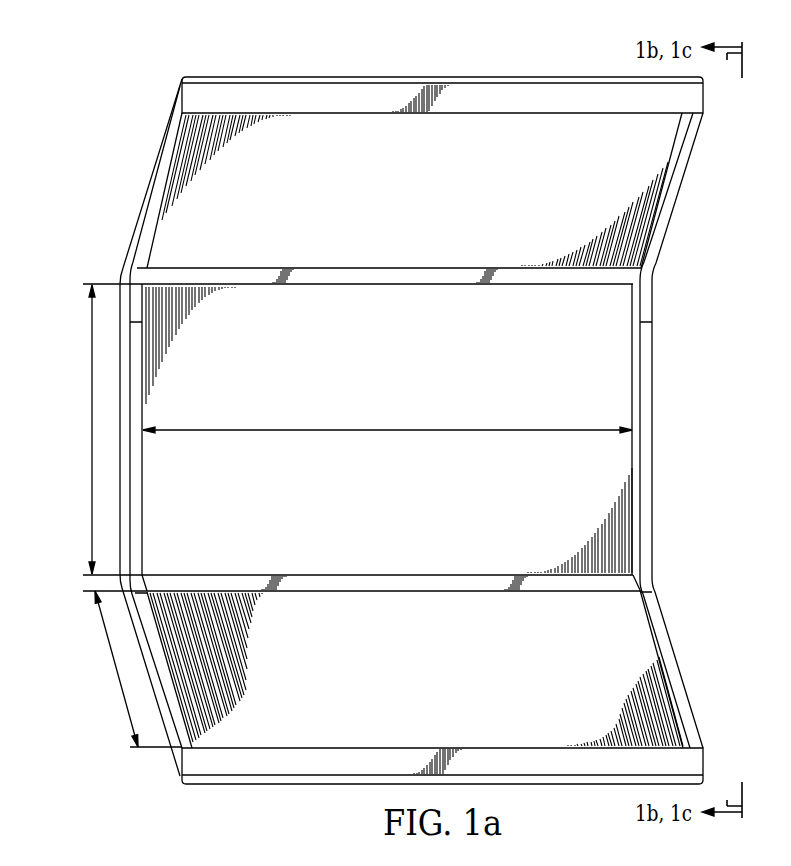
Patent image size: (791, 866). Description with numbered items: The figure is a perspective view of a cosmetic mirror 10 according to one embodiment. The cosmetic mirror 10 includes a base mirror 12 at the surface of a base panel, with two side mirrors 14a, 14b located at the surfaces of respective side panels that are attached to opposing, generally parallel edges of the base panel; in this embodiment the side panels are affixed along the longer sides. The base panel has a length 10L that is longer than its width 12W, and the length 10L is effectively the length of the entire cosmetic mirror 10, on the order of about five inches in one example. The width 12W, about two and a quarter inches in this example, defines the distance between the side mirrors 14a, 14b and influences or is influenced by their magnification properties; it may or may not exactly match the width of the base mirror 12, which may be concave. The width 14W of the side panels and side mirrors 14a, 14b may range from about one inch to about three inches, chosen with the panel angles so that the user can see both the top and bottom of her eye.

The cosmetic mirror 10 is at (99, 141).
The side mirror 14a is at (523, 125).
The base mirror 12 is at (613, 380).
The side mirror 14b is at (633, 660).
The length 10L is at (388, 430).
The width 12W is at (92, 430).
The width 14W is at (113, 668).